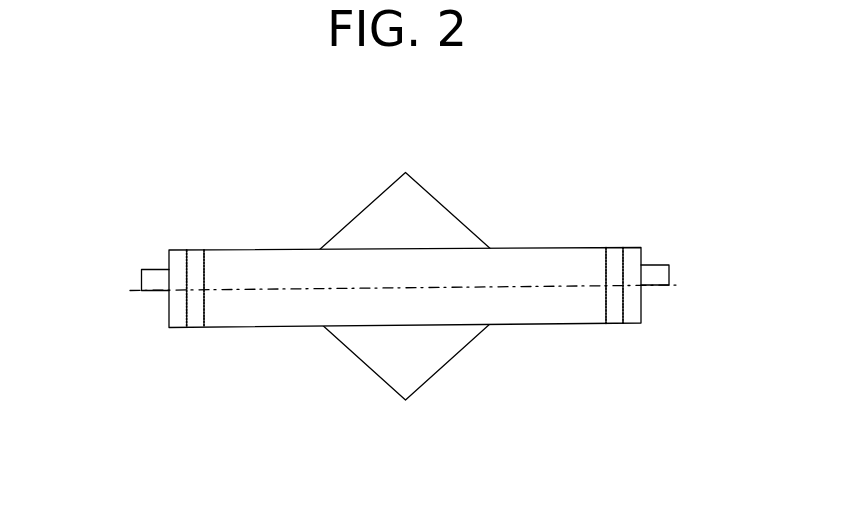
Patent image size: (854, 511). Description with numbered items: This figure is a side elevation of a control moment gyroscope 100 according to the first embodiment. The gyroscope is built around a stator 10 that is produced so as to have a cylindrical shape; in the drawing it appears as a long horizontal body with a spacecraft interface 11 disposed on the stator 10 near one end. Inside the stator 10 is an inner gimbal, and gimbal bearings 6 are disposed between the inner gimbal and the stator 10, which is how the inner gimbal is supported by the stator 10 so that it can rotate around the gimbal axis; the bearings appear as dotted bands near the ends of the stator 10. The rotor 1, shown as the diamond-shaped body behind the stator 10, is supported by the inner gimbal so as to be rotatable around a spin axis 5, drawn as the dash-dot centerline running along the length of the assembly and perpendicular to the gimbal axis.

The control moment gyroscope 100 is at (134, 134).
The rotor 1 is at (458, 217).
The stator 10 is at (257, 255).
The gimbal bearings 6 is at (613, 257).
The spacecraft interface 11 is at (657, 267).
The spin axis 5 is at (673, 287).